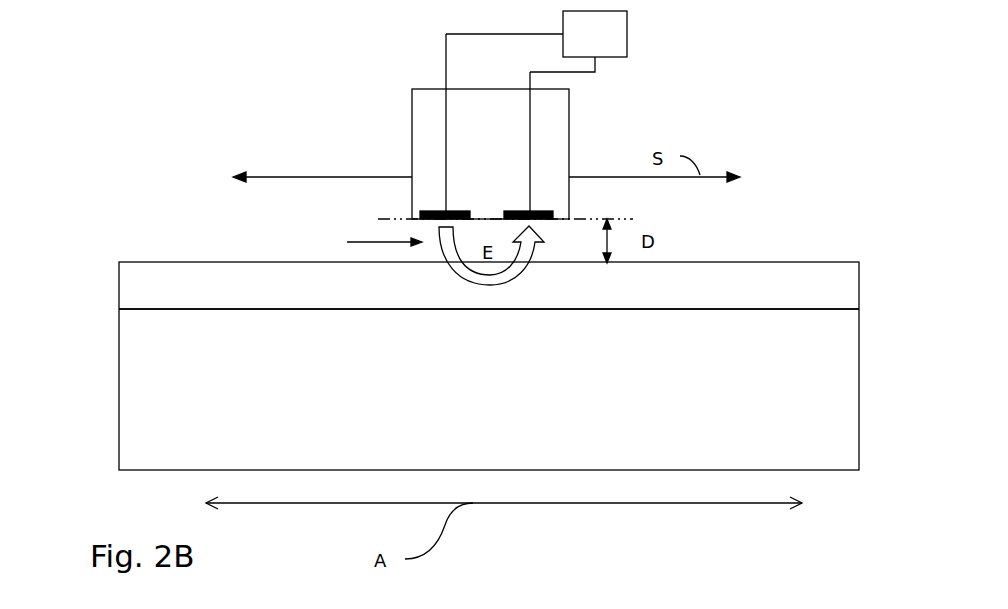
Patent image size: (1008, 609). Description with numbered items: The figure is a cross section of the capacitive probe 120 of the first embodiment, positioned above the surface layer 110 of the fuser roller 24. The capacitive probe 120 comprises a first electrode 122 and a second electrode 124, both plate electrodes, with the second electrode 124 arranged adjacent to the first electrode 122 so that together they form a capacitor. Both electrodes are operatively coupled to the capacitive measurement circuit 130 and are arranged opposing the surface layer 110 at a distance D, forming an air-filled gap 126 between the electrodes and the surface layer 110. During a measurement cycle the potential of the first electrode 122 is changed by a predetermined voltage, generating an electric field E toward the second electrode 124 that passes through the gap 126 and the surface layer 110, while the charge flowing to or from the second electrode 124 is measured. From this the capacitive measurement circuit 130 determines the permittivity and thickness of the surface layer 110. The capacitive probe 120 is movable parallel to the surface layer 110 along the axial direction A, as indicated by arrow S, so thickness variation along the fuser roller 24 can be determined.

The surface layer 110 is at (175, 272).
The fuser roller 24 is at (495, 444).
The capacitive probe 120 is at (412, 157).
The first electrode 122 is at (420, 211).
The second electrode 124 is at (542, 211).
The gap 126 is at (338, 251).
The capacitive measurement circuit 130 is at (627, 33).